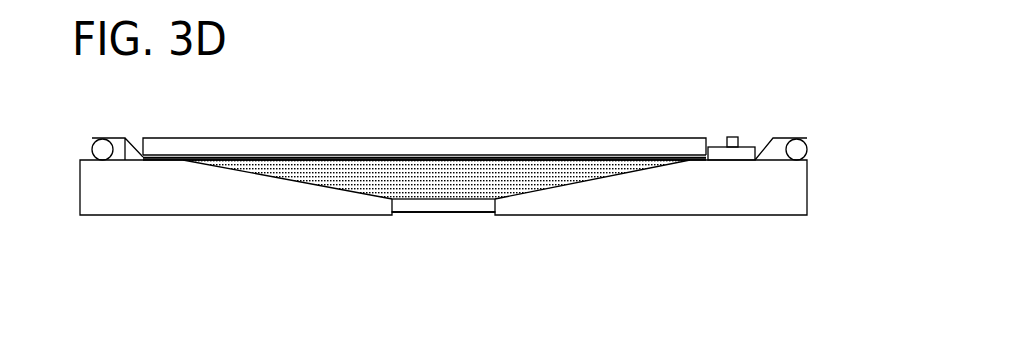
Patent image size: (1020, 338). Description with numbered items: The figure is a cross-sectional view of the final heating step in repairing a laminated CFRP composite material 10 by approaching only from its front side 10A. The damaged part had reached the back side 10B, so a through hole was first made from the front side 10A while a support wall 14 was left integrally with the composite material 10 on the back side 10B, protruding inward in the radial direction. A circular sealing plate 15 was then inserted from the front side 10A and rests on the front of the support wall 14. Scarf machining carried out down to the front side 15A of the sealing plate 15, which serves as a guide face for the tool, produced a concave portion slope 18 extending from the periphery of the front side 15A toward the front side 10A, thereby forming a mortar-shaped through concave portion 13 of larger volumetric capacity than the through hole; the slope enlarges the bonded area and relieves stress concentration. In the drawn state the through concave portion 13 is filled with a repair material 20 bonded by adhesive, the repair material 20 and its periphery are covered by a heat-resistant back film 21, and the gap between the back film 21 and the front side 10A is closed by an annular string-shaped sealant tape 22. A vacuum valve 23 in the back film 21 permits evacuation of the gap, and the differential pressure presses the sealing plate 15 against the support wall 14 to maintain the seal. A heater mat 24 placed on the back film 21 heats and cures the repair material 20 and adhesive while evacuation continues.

The composite material 10 is at (818, 148).
The front side 10A is at (132, 137).
The back side 10B is at (152, 215).
The through concave portion 13 is at (662, 158).
The support wall 14 is at (403, 213).
The sealing plate 15 is at (430, 213).
The front side of sealing plate 15A is at (460, 190).
The concave portion slope 18 is at (243, 160).
The repair material 20 is at (505, 152).
The back film 21 is at (610, 158).
The sealant tape 22 is at (90, 150).
The vacuum valve 23 is at (731, 137).
The heater mat 24 is at (310, 137).